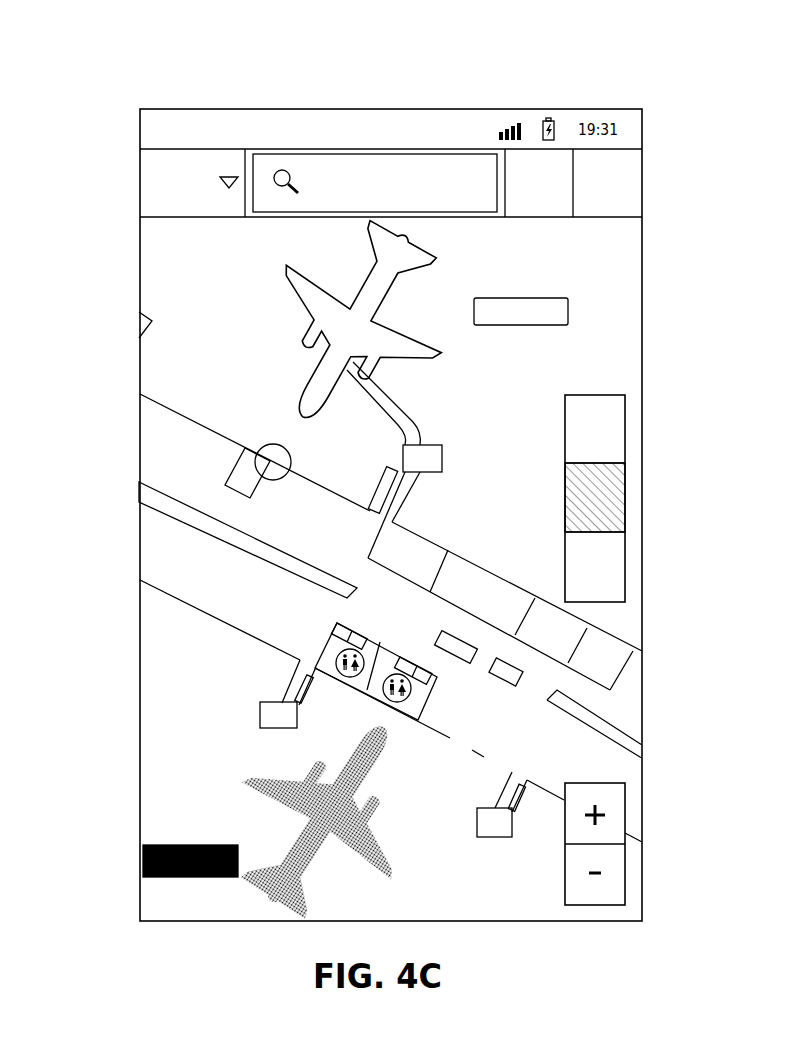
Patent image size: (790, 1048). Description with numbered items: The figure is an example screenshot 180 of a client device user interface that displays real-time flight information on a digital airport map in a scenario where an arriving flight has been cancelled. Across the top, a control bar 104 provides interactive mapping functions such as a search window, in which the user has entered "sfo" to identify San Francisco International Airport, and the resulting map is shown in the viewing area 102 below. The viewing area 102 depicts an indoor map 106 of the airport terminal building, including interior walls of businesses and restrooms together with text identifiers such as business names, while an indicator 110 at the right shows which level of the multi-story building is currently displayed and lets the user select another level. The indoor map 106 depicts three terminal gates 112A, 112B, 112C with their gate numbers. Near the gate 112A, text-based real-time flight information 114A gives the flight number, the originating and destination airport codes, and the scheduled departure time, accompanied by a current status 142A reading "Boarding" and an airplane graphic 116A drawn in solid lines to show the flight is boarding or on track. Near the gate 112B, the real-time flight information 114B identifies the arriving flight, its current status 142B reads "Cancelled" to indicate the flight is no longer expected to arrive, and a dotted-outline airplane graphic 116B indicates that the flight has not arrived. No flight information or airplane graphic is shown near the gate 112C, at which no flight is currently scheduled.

The example screenshot 180 is at (398, 52).
The control bar 104 is at (139, 164).
The viewing area 102 is at (139, 272).
The indoor map 106 is at (227, 625).
The indicator 110 is at (565, 429).
The terminal gate 112A is at (412, 485).
The terminal gate 112B is at (285, 689).
The terminal gate 112C is at (491, 837).
The real-time flight information 114A is at (601, 245).
The real-time flight information 114B is at (184, 770).
The airplane graphic 116A is at (287, 290).
The airplane graphic 116B is at (318, 843).
The current status 142A is at (523, 325).
The current status 142B is at (167, 877).